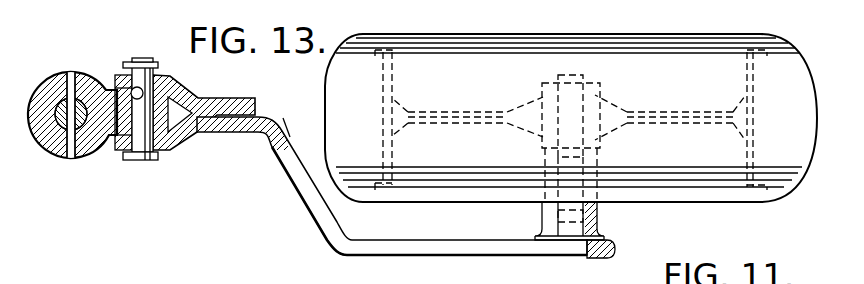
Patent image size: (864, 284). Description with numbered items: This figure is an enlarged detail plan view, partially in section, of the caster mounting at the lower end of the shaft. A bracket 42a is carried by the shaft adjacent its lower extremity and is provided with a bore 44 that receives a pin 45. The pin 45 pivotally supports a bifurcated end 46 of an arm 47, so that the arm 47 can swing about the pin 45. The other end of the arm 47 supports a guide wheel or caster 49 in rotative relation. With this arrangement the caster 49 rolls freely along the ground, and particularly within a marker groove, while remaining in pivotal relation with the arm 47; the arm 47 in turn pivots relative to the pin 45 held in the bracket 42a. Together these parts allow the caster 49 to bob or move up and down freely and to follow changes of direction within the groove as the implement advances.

The bracket 42a is at (93, 147).
The bore 44 is at (112, 81).
The pin 45 is at (157, 157).
The bifurcated end 46 is at (192, 141).
The arm 47 is at (465, 258).
The guide wheel or caster 49 is at (492, 80).